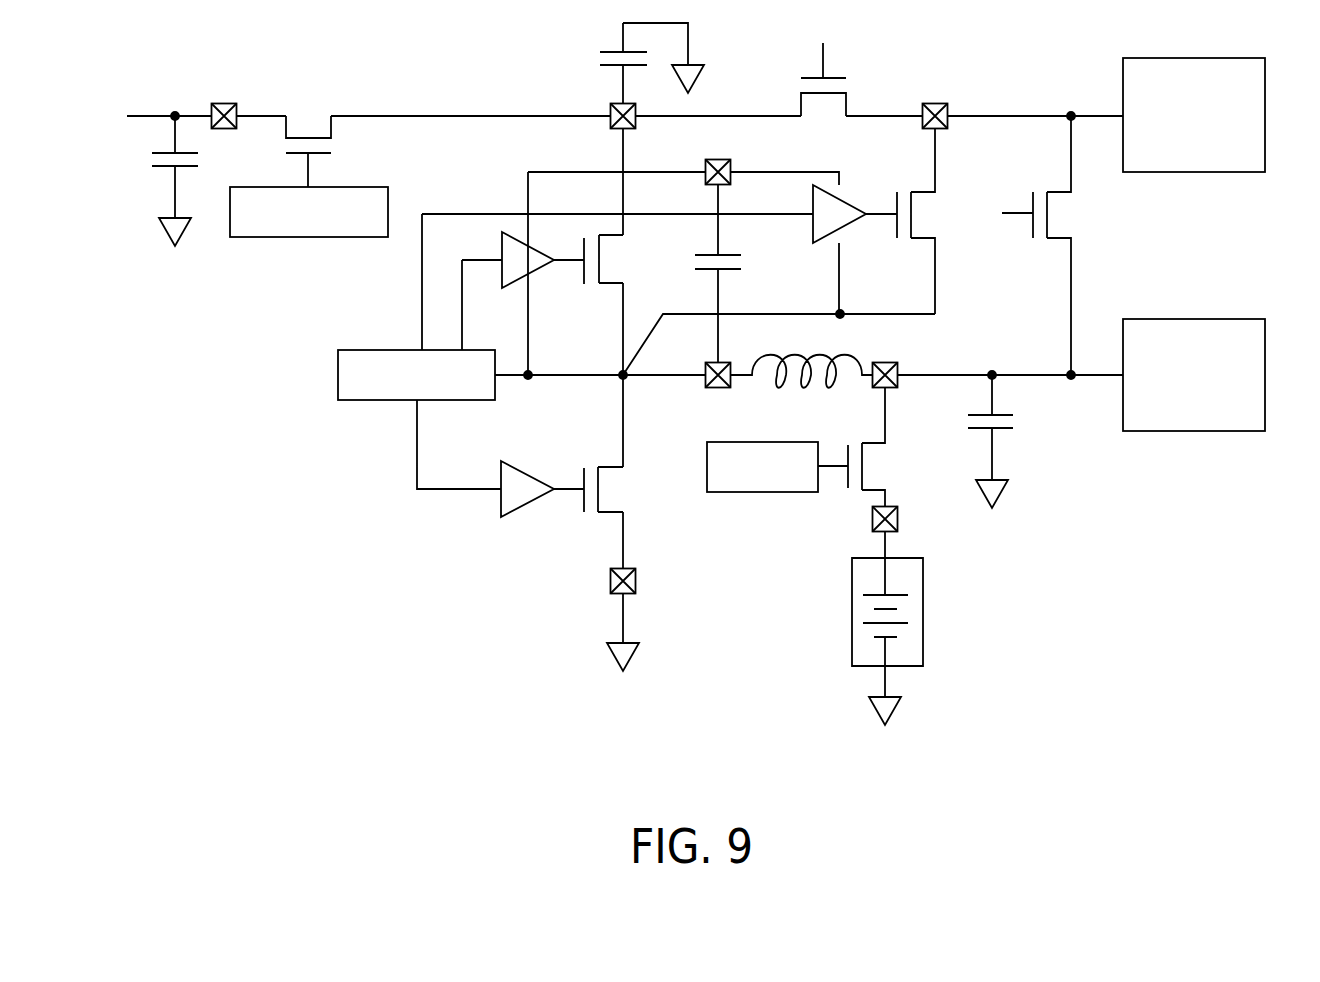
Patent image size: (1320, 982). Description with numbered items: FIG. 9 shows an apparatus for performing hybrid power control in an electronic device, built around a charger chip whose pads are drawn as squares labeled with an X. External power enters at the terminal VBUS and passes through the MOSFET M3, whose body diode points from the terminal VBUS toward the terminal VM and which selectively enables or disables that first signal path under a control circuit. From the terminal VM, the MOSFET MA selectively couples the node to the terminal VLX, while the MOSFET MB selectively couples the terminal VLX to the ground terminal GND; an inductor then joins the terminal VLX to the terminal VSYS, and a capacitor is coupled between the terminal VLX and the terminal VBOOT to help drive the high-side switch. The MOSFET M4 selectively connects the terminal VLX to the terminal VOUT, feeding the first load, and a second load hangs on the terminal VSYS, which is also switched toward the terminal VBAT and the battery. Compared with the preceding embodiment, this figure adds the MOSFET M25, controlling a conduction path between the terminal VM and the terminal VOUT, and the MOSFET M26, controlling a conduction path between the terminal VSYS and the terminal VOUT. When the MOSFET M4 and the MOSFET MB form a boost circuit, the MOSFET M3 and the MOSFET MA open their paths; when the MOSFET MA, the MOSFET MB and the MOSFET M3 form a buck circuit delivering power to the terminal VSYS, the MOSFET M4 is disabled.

The terminal VBUS is at (178, 104).
The MOSFET M3 is at (308, 133).
The terminal VM is at (623, 76).
The terminal VBOOT is at (683, 242).
The MOSFET MA is at (563, 260).
The MOSFET M4 is at (893, 221).
The MOSFET M25 is at (830, 98).
The terminal VOUT is at (931, 98).
The MOSFET M26 is at (1063, 245).
The terminal VLX is at (716, 394).
The terminal VSYS is at (890, 358).
The terminal VBAT is at (853, 614).
The MOSFET MB is at (541, 458).
The ground terminal GND is at (657, 616).